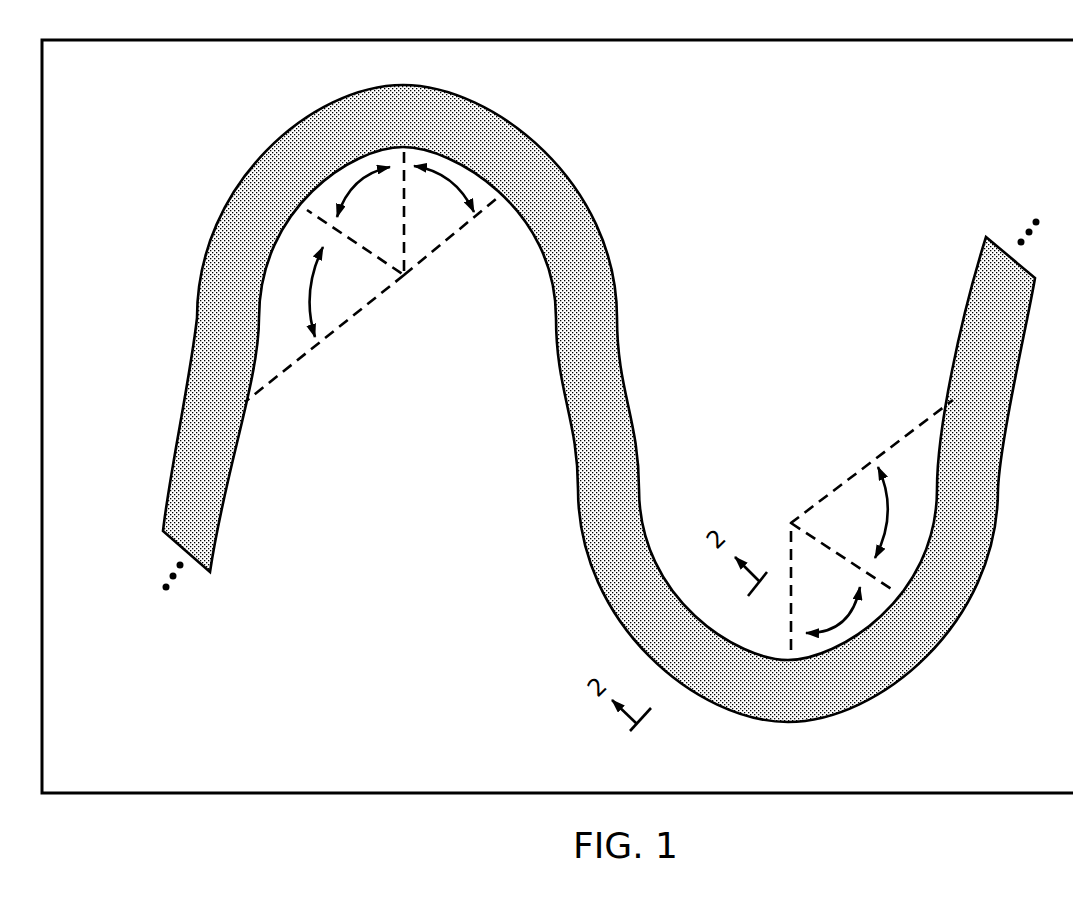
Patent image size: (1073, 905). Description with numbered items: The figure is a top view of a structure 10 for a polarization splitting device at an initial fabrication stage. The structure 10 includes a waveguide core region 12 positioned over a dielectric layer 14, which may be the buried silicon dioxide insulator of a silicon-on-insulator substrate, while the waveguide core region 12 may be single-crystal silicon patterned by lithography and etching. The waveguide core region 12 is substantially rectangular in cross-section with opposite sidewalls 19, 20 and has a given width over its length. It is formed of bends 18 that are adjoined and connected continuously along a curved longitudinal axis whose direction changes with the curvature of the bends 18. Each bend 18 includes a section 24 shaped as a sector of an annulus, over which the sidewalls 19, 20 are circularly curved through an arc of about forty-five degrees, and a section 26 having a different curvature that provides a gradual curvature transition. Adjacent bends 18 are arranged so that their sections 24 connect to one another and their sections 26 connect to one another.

The structure 10 is at (578, 391).
The waveguide core region 12 is at (545, 431).
The dielectric layer 14 is at (1045, 749).
The bends 18 is at (252, 206).
The sidewall 19 is at (557, 311).
The sidewall 20 is at (618, 301).
The section 24 is at (838, 606).
The section 26 is at (925, 513).